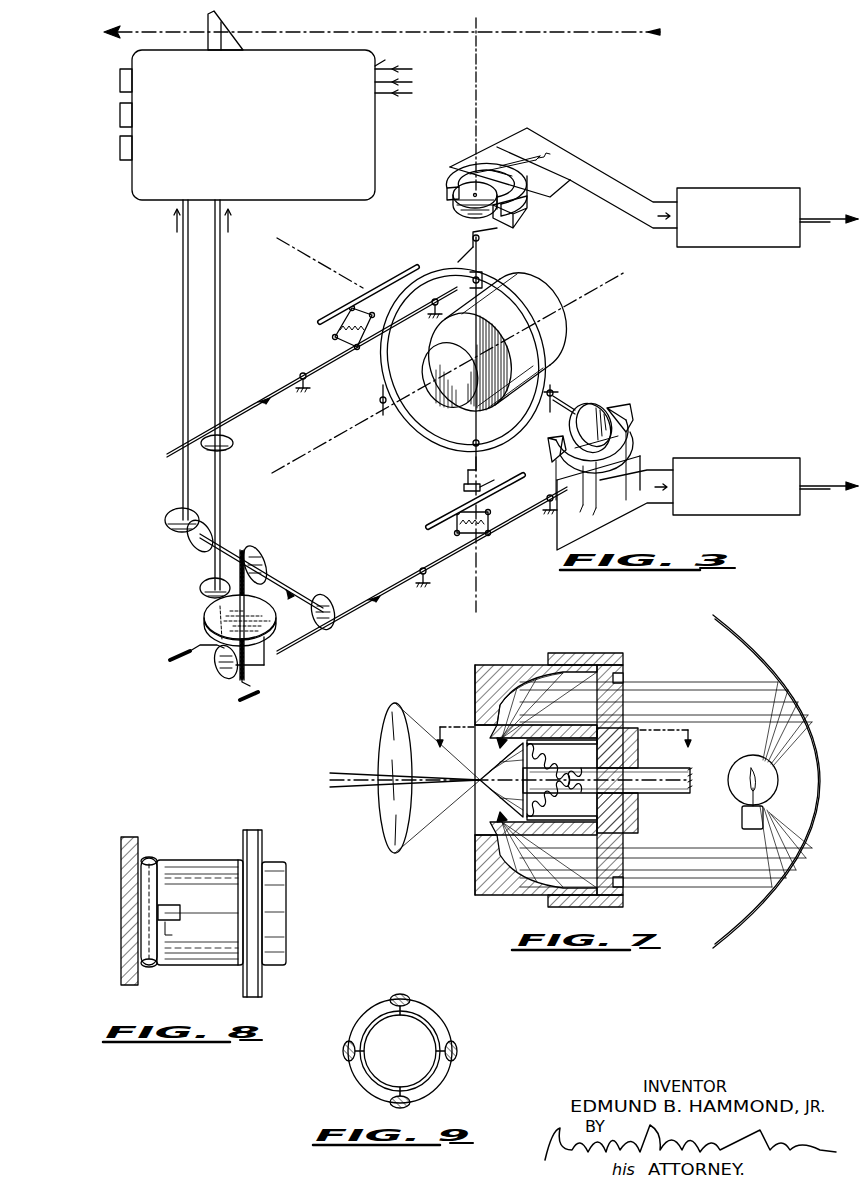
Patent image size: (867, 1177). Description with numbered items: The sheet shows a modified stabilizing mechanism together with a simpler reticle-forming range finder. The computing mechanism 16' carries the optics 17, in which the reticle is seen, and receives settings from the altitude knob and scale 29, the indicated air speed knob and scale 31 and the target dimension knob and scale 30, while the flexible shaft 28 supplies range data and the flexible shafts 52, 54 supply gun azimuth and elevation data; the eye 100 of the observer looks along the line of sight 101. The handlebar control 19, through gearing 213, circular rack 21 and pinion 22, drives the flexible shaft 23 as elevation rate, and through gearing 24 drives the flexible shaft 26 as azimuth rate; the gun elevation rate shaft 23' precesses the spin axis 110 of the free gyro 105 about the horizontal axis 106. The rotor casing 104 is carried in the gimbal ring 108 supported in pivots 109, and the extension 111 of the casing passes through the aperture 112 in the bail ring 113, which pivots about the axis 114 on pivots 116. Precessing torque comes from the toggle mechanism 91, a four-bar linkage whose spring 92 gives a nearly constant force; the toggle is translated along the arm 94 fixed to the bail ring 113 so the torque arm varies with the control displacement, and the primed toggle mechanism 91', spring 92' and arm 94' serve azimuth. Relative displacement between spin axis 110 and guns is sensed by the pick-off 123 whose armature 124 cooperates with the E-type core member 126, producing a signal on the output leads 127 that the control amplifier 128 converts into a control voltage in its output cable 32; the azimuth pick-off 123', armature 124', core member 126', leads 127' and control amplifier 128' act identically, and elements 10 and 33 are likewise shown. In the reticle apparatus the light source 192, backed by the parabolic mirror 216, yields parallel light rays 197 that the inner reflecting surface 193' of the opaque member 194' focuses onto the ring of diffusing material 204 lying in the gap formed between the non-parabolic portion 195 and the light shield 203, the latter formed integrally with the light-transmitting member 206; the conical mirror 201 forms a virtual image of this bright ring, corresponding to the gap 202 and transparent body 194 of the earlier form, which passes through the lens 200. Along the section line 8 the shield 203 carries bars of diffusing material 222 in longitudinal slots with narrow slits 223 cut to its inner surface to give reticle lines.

In FIG. 3, the eye of the observer 100 is at (114, 29).
In FIG. 3, the line of sight 101 is at (300, 32).
In FIG. 3, the optics 17 is at (209, 22).
In FIG. 3, the computing mechanism 16' is at (273, 125).
In FIG. 3, the altitude setting knob and scale 29 is at (119, 92).
In FIG. 3, the indicated air speed setting knob and scale 31 is at (118, 124).
In FIG. 3, the target dimension knob and scale 30 is at (118, 158).
In FIG. 3, the flexible shaft 28 is at (380, 62).
In FIG. 3, the flexible shaft 52 is at (380, 63).
In FIG. 3, the flexible shaft 54 is at (378, 95).
In FIG. 3, the flexible shaft 23 is at (172, 366).
In FIG. 3, the flexible shaft 26 is at (222, 328).
In FIG. 3, the gun elevation rate shaft 23' is at (260, 574).
In FIG. 3, the pinion 22 is at (264, 553).
In FIG. 3, the circular rack 21 is at (243, 552).
In FIG. 3, the gearing 24 is at (206, 604).
In FIG. 3, the gearing 213 is at (255, 667).
In FIG. 3, the handlebar control 19 is at (253, 705).
In FIG. 3, the horizontal axis 106 is at (313, 262).
In FIG. 3, the spin axis 110 is at (572, 302).
In FIG. 3, the extension of the rotor casing 111 is at (335, 438).
In FIG. 3, the axis 114 is at (478, 572).
In FIG. 3, the spring 92' is at (312, 372).
In FIG. 3, the toggle mechanism 91' is at (335, 328).
In FIG. 3, the arm 94' is at (368, 290).
In FIG. 3, the pivots 109 is at (368, 348).
In FIG. 3, the free gyro 105 is at (546, 299).
In FIG. 3, the gyro rotor casing 104 is at (490, 410).
In FIG. 3, the bail ring 113 is at (458, 264).
In FIG. 3, the aperture 112 is at (378, 402).
In FIG. 3, the gimbal ring 108 is at (552, 384).
In FIG. 3, the link 10 is at (567, 398).
In FIG. 3, the pivots 116 is at (482, 246).
In FIG. 3, the armature 124' is at (450, 200).
In FIG. 3, the pick-off 123' is at (497, 205).
In FIG. 3, the core member 126' is at (476, 164).
In FIG. 3, the output leads 127' is at (563, 178).
In FIG. 3, the control amplifier 128' is at (738, 202).
In FIG. 3, the output 33 is at (822, 212).
In FIG. 3, the armature 124 is at (603, 420).
In FIG. 3, the pick-off 123 is at (607, 457).
In FIG. 3, the core member 126 is at (621, 438).
In FIG. 3, the output leads 127 is at (616, 503).
In FIG. 3, the control amplifier 128 is at (736, 473).
In FIG. 3, the output cable 32 is at (822, 478).
In FIG. 3, the spring 92 is at (422, 570).
In FIG. 3, the toggle mechanism 91 is at (487, 514).
In FIG. 3, the arm 94 is at (460, 502).
In FIG. 7, the lens 200 is at (384, 718).
In FIG. 7, the opaque member 194' is at (527, 766).
In FIG. 7, the inner reflecting surface 193' is at (547, 762).
In FIG. 7, the ring of diffusing material 204 is at (490, 710).
In FIG. 8, the ring of diffusing material 204 is at (150, 967).
In FIG. 7, the non-parabolic portion 195 is at (470, 718).
In FIG. 8, the non-parabolic portion 195 is at (150, 858).
In FIG. 7, the bars of diffusing material 222 is at (503, 736).
In FIG. 8, the bars of diffusing material 222 is at (172, 903).
In FIG. 9, the bars of diffusing material 222 is at (404, 996).
In FIG. 7, the member 206 is at (623, 665).
In FIG. 8, the member 206 is at (262, 842).
In FIG. 7, the conical mirror 201 is at (480, 800).
In FIG. 7, the gap 202 is at (645, 793).
In FIG. 7, the slits 223 is at (500, 815).
In FIG. 8, the slits 223 is at (183, 935).
In FIG. 9, the slits 223 is at (400, 1015).
In FIG. 7, the light shield 203 is at (492, 836).
In FIG. 8, the light shield 203 is at (226, 860).
In FIG. 9, the light shield 203 is at (448, 1028).
In FIG. 7, the section line 8 is at (563, 745).
In FIG. 7, the light rays 197 is at (696, 702).
In FIG. 7, the parabolic mirror 216 is at (725, 935).
In FIG. 7, the light source 192 is at (740, 808).
In FIG. 8, the transparent body 194 is at (110, 906).